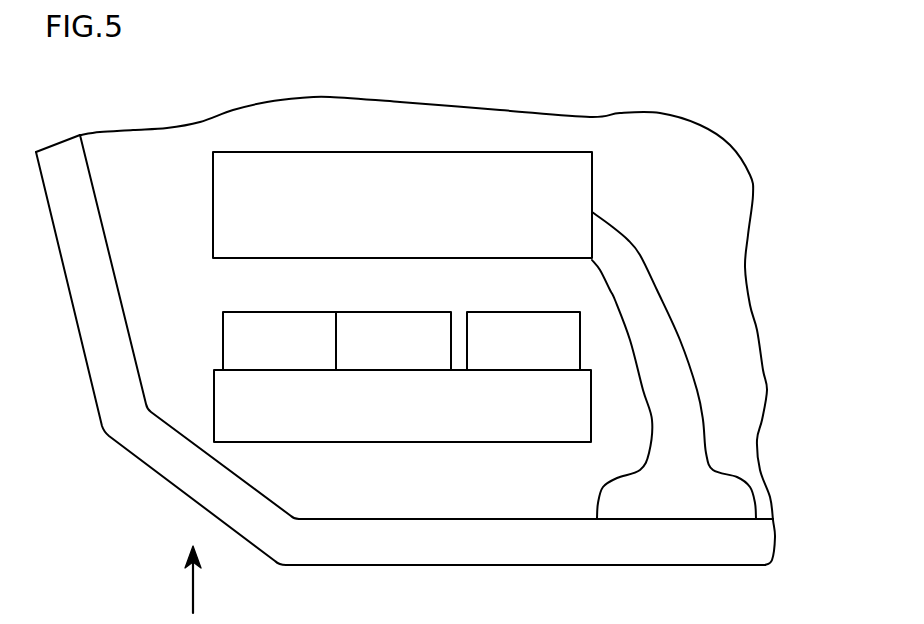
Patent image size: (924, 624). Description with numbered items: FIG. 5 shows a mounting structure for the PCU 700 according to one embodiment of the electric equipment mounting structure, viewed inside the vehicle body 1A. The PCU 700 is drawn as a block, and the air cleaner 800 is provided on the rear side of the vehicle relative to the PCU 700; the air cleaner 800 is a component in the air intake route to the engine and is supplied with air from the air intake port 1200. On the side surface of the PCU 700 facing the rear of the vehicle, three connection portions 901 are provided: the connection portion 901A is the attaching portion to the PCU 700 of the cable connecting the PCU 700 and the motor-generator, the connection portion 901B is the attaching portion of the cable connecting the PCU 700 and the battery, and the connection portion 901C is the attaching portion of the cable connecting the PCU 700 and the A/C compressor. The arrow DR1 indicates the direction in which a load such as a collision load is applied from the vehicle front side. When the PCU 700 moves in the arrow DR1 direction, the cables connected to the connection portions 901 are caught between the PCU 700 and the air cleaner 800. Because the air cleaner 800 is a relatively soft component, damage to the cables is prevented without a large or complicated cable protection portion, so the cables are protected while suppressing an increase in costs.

The vehicle body 1A is at (78, 321).
The PCU 700 is at (214, 402).
The air cleaner 800 is at (408, 150).
The connection portions 901 is at (556, 310).
The connection portion 901A is at (390, 312).
The connection portion 901B is at (292, 312).
The connection portion 901C is at (580, 343).
The air intake port 1200 is at (671, 520).
The arrow DR1 direction DR1 is at (197, 585).